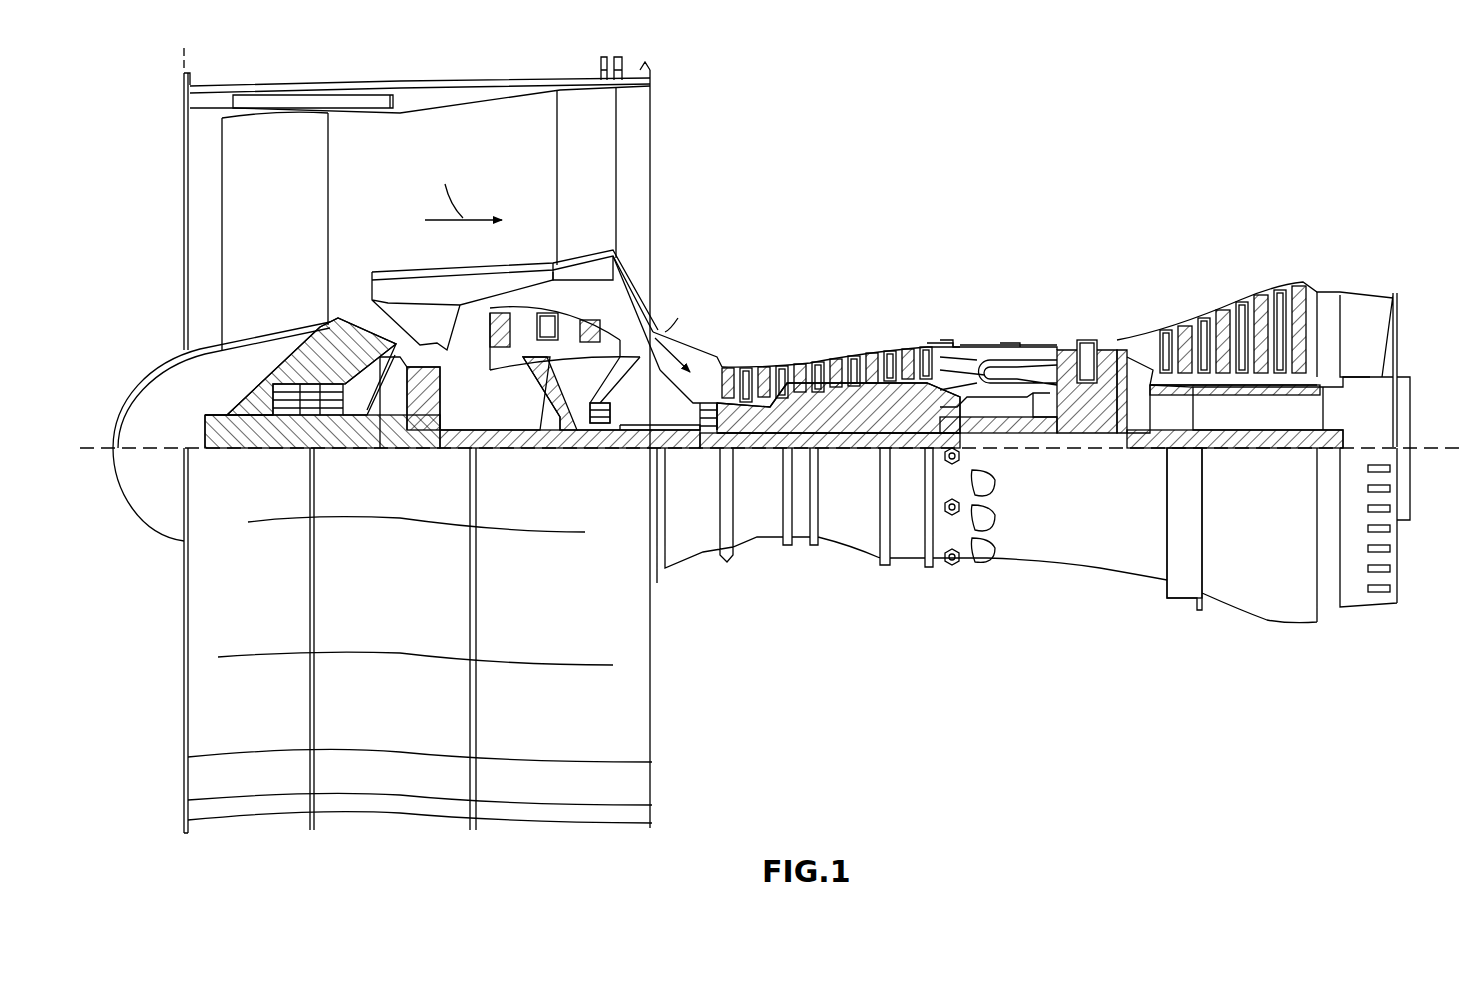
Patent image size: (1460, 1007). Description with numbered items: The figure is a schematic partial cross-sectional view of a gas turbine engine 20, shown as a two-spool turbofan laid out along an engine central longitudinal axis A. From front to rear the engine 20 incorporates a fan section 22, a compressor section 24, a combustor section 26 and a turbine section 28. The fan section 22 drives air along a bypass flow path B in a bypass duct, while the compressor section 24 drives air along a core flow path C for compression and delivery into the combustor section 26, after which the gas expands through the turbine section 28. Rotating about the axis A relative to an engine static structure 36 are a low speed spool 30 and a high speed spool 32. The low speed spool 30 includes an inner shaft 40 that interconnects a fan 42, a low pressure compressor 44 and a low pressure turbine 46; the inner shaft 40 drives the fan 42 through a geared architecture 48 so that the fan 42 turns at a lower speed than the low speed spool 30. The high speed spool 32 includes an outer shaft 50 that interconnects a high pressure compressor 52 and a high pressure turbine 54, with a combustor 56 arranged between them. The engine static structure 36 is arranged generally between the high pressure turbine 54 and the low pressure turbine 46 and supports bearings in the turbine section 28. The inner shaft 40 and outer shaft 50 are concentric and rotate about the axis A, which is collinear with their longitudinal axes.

The gas turbine engine 20 is at (1343, 46).
The fan section 22 is at (441, 55).
The compressor section 24 is at (817, 286).
The combustor section 26 is at (1107, 290).
The turbine section 28 is at (1310, 268).
The low speed spool 30 is at (862, 458).
The high speed spool 32 is at (893, 402).
The engine static structure 36 is at (906, 568).
The inner shaft 40 is at (683, 452).
The fan 42 is at (290, 246).
The low pressure compressor 44 is at (573, 314).
The low pressure turbine 46 is at (1248, 306).
The geared architecture 48 is at (428, 432).
The outer shaft 50 is at (1080, 435).
The high pressure compressor 52 is at (805, 371).
The high pressure turbine 54 is at (1087, 345).
The combustor 56 is at (1010, 368).
The engine central longitudinal axis A is at (1424, 446).